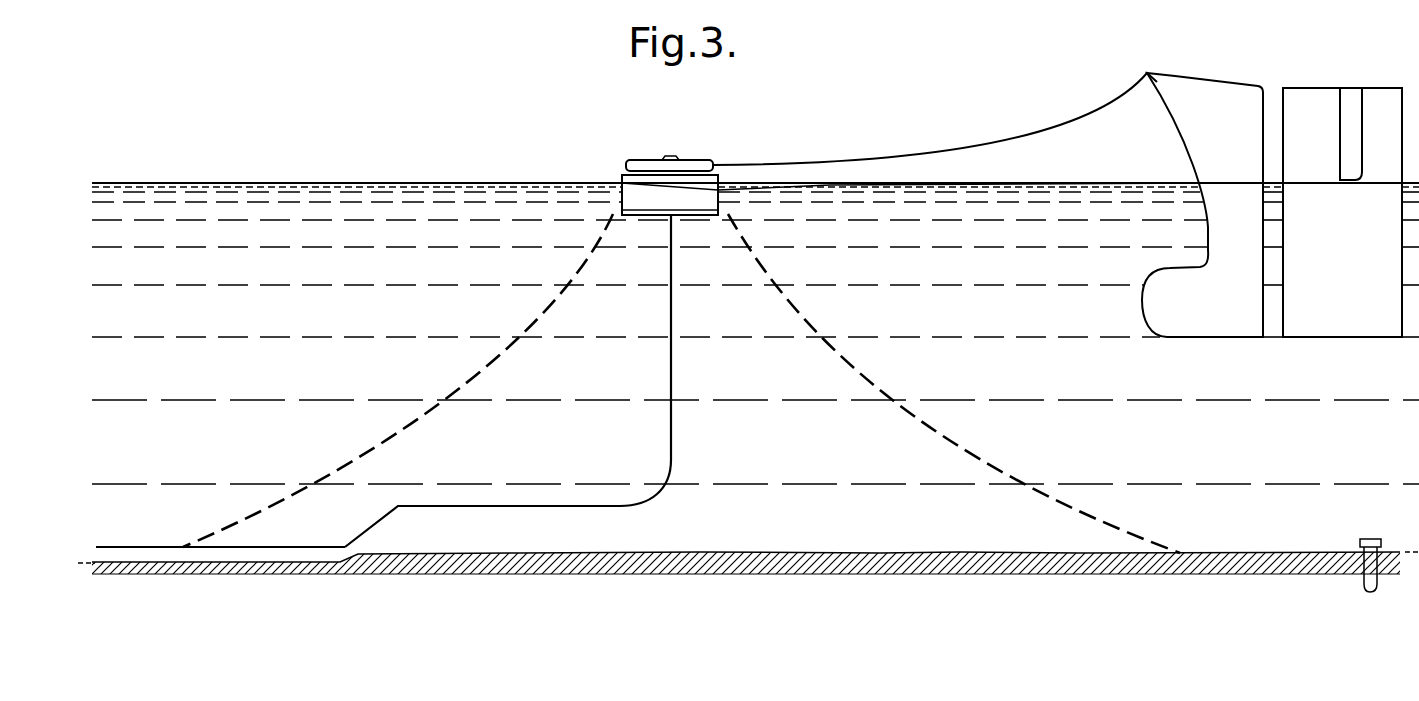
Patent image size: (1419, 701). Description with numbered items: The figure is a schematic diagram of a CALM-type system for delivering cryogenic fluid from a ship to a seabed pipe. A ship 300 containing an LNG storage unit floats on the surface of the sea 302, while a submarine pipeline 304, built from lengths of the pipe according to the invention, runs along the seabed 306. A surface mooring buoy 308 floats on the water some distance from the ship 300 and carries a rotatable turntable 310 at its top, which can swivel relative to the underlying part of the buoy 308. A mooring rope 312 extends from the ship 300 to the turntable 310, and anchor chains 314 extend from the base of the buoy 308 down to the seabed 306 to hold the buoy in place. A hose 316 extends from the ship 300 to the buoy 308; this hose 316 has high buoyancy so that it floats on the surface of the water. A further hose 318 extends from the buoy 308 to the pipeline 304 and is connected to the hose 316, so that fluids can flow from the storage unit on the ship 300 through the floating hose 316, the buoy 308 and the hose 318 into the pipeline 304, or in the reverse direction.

The ship 300 is at (1143, 302).
The sea 302 is at (218, 183).
The submarine pipeline 304 is at (160, 552).
The seabed 306 is at (946, 550).
The surface mooring buoy 308 is at (691, 219).
The rotatable turntable 310 is at (667, 158).
The mooring rope 312 is at (904, 158).
The anchor chains 314 is at (482, 381).
The hose 316 is at (674, 430).
The hose 318 is at (1050, 184).